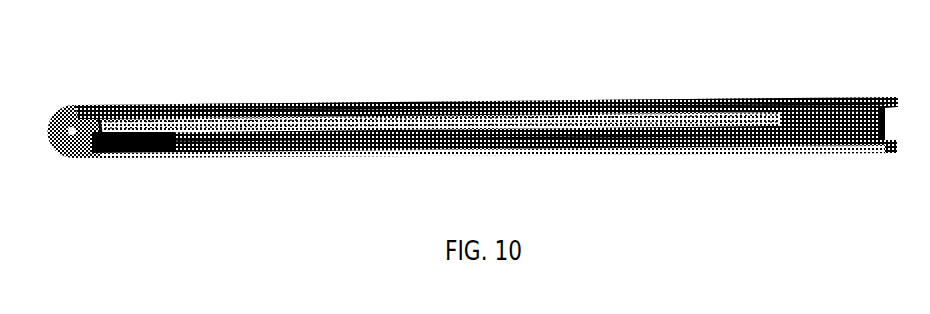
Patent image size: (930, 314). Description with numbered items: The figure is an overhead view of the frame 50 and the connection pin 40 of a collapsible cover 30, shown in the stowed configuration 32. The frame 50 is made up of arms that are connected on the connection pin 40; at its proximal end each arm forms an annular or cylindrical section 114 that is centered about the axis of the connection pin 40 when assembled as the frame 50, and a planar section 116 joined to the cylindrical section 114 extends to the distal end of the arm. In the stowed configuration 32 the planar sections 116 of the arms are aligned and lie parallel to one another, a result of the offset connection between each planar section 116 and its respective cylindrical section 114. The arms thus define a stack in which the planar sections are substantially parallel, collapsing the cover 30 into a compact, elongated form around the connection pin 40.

The cover 30 is at (693, 218).
The stowed configuration 32 is at (751, 218).
The connection pin 40 is at (73, 133).
The frame 50 is at (201, 198).
The cylindrical section 114 is at (83, 120).
The planar section 116 is at (395, 103).